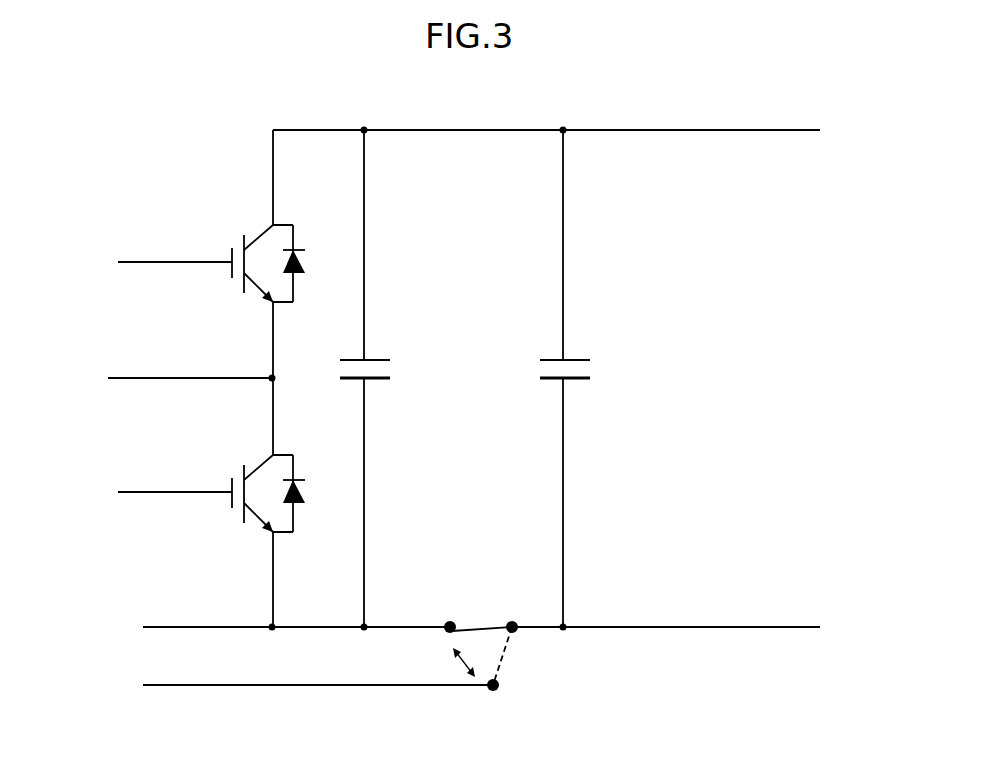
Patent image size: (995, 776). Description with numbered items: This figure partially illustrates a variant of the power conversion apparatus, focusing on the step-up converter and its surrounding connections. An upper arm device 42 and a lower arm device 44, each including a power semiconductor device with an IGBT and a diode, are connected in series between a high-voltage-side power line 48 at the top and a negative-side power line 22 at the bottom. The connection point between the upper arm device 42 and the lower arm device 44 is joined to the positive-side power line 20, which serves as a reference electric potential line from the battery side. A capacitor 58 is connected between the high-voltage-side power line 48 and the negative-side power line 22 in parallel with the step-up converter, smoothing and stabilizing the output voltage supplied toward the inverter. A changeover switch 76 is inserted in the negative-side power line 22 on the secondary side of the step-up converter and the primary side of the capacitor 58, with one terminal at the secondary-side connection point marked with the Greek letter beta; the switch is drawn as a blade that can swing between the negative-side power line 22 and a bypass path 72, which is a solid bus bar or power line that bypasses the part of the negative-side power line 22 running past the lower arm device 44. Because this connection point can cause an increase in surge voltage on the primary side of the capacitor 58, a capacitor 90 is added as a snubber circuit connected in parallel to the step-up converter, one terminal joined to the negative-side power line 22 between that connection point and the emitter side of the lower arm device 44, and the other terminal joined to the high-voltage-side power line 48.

The high-voltage-side power line 48 is at (447, 128).
The upper arm device 42 is at (253, 232).
The lower arm device 44 is at (253, 462).
The positive-side power line 20 is at (143, 378).
The capacitor 90 is at (375, 360).
The capacitor 58 is at (575, 360).
The negative-side power line 22 is at (203, 627).
The changeover switch 76 is at (479, 626).
The bypass path 72 is at (203, 685).